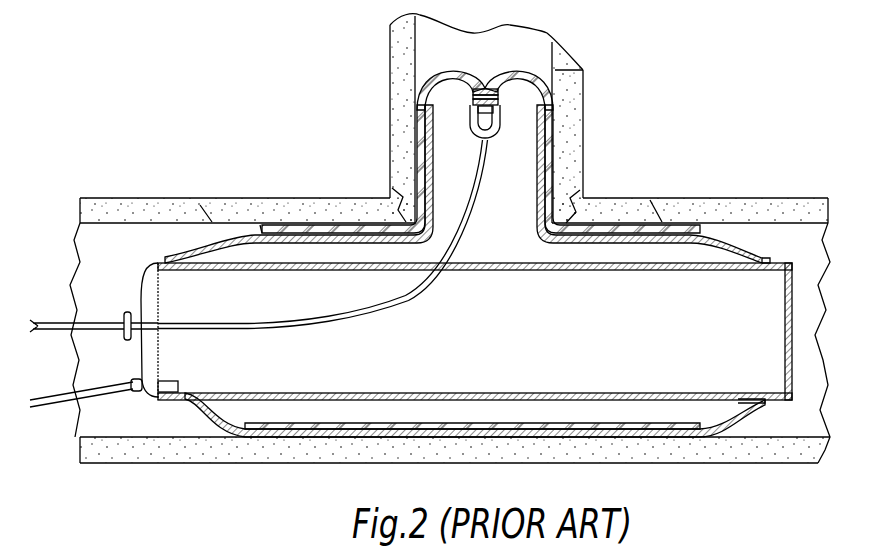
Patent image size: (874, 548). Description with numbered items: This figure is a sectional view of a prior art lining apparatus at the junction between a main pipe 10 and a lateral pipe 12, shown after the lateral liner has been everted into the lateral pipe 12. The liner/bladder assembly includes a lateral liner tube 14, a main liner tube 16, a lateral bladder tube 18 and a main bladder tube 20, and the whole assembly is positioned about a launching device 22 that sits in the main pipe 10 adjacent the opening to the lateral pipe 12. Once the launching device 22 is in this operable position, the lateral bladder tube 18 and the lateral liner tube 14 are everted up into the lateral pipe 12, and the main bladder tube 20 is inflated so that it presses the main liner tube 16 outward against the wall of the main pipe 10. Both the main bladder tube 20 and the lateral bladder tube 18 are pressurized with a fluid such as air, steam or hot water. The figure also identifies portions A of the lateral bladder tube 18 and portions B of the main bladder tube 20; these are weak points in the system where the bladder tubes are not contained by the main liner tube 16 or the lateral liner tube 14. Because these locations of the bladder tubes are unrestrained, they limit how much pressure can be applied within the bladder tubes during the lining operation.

The main pipe 10 is at (740, 198).
The lateral pipe 12 is at (584, 99).
The lateral liner tube 14 is at (421, 137).
The main liner tube 16 is at (350, 222).
The lateral bladder tube 18 is at (547, 164).
The main bladder tube 20 is at (464, 299).
The launching device 22 is at (138, 264).
The portions of the lateral bladder tube A is at (453, 73).
The portions of the main bladder tube B is at (225, 246).